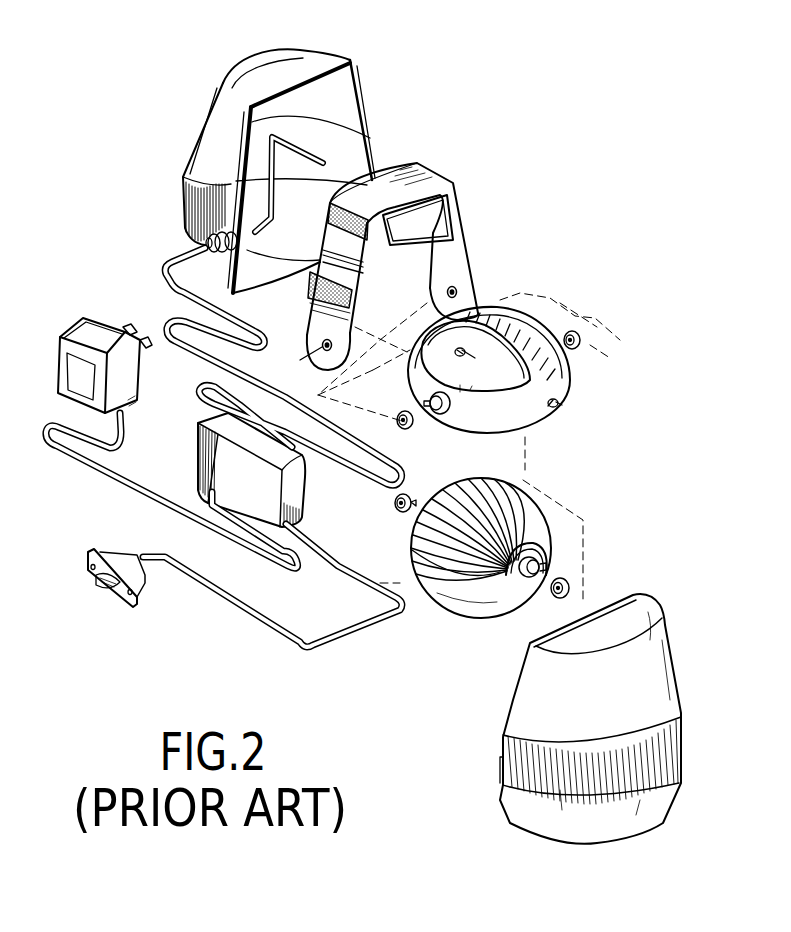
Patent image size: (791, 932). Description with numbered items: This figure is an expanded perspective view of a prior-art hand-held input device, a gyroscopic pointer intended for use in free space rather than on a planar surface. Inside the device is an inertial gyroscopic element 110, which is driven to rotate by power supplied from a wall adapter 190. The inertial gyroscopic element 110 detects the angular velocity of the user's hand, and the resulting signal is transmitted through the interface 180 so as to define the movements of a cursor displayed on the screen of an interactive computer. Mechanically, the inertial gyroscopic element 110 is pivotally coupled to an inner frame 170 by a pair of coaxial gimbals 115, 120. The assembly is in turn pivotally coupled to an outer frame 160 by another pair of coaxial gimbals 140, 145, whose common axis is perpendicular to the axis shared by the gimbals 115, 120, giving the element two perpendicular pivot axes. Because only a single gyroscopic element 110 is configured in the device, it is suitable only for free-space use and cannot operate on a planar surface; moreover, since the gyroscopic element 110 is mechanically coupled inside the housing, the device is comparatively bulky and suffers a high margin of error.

The inertial gyroscopic element 110 is at (457, 607).
The coaxial gimbal 115 is at (412, 498).
The coaxial gimbal 120 is at (533, 597).
The coaxial gimbal 140 is at (418, 417).
The coaxial gimbal 145 is at (566, 355).
The outer frame 160 is at (447, 180).
The inner frame 170 is at (515, 305).
The interface 180 is at (107, 593).
The wall adapter 190 is at (99, 320).